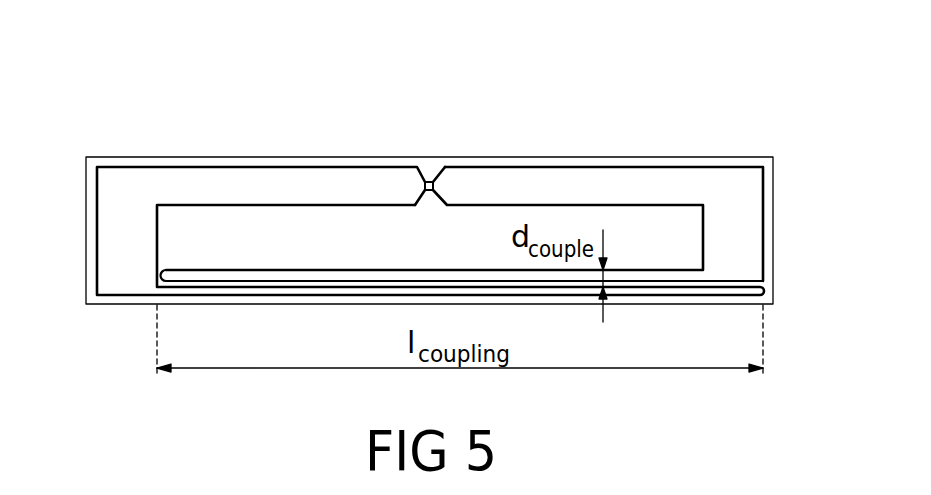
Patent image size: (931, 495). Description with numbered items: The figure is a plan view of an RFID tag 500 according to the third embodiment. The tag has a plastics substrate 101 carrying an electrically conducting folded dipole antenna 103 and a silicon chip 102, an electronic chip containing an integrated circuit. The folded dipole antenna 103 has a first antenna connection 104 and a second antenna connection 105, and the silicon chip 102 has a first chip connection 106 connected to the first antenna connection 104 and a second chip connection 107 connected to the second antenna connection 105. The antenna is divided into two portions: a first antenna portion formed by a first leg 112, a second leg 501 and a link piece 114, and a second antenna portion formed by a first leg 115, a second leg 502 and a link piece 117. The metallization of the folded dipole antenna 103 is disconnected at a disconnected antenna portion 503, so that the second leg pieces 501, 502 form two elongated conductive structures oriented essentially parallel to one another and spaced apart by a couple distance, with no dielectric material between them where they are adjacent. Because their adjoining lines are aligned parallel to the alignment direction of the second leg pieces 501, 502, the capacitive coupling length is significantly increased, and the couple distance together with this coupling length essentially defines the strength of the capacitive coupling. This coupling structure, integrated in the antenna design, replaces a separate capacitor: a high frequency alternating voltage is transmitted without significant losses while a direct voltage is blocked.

The RFID tag 500 is at (648, 75).
The plastics substrate 101 is at (170, 218).
The first leg 112 is at (198, 180).
The folded dipole antenna 103 is at (270, 182).
The first antenna connection 104 is at (420, 186).
The silicon chip 102 is at (430, 181).
The second antenna connection 105 is at (440, 186).
The first chip connection 106 is at (424, 186).
The second chip connection 107 is at (435, 186).
The first leg 115 is at (637, 175).
The link piece 114 is at (108, 236).
The link piece 117 is at (750, 240).
The second leg 502 is at (652, 267).
The second leg 501 is at (207, 296).
The disconnected antenna portion 503 is at (270, 288).